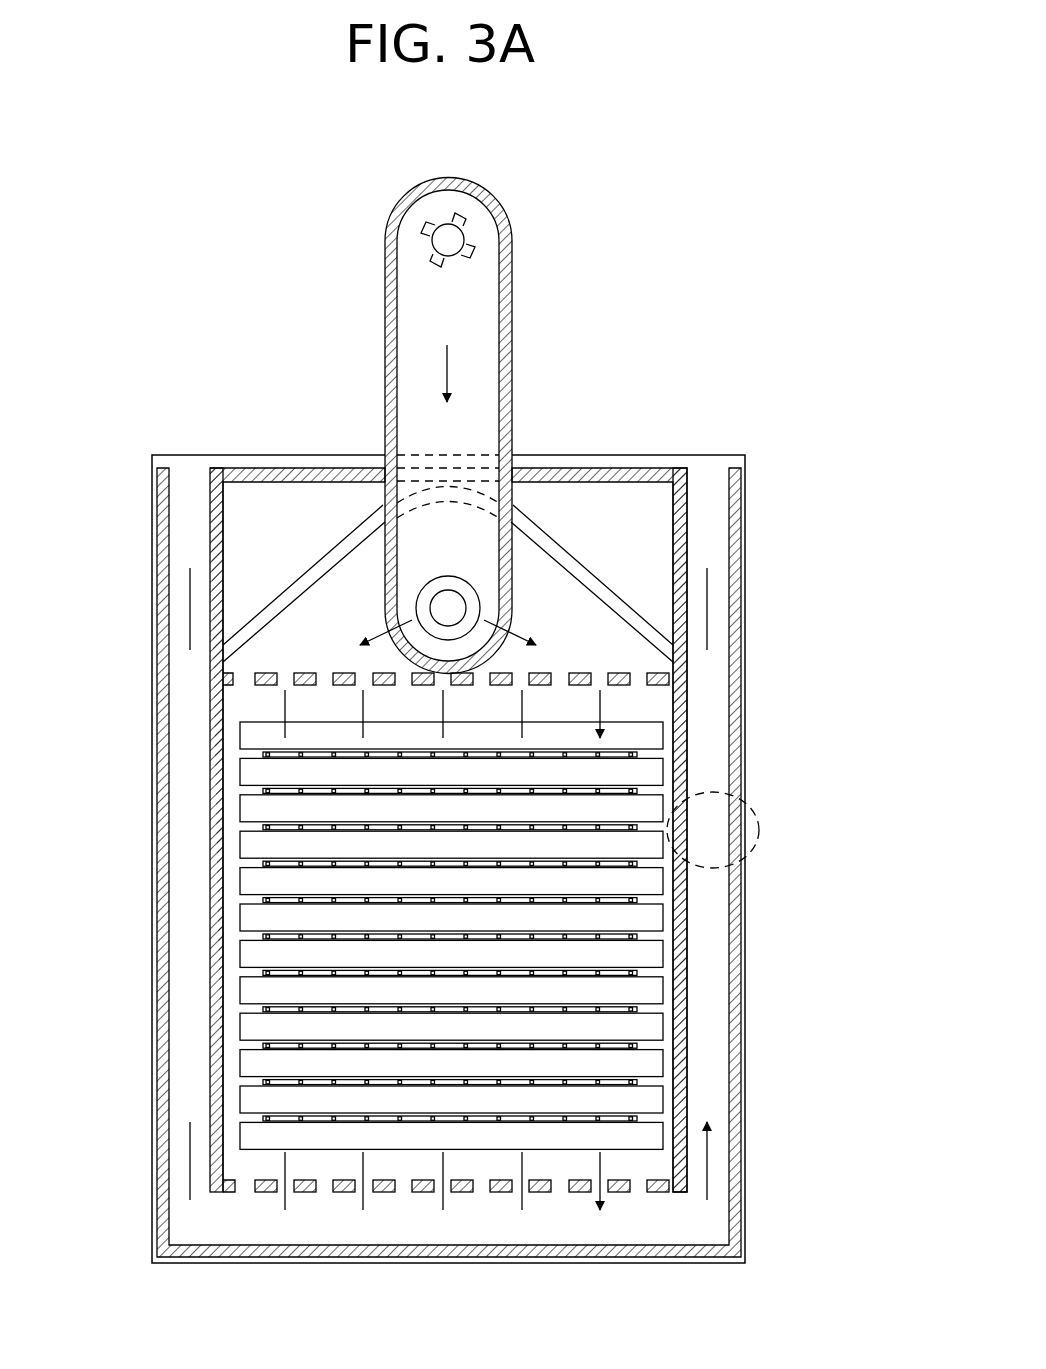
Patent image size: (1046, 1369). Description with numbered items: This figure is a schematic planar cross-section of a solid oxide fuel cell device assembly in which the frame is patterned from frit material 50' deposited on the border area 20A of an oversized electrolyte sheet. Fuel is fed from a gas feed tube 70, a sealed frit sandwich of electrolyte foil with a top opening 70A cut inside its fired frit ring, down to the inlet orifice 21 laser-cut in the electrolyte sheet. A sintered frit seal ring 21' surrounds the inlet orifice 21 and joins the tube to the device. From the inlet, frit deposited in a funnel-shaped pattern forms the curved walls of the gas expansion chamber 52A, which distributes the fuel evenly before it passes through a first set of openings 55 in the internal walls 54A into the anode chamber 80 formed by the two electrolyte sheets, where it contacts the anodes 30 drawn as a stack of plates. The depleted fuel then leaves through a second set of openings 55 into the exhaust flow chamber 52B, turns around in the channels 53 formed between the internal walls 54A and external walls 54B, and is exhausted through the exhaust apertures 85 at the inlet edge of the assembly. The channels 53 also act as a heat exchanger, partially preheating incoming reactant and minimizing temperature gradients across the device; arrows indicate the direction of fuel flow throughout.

The border area 20A is at (760, 822).
The inlet orifice 21 is at (449, 567).
The seal ring 21' is at (429, 610).
The anode 30 is at (636, 918).
The frit material 50' is at (647, 391).
The gas expansion chamber 52A is at (298, 632).
The exhaust flow chamber 52B is at (480, 1224).
The channels 53 is at (195, 1020).
The internal walls 54A is at (686, 1002).
The external walls 54B is at (741, 962).
The openings 55 is at (635, 675).
The gas feed tube 70 is at (512, 318).
The top opening 70A is at (452, 242).
The anode chamber 80 is at (620, 707).
The exhaust apertures 85 is at (190, 472).